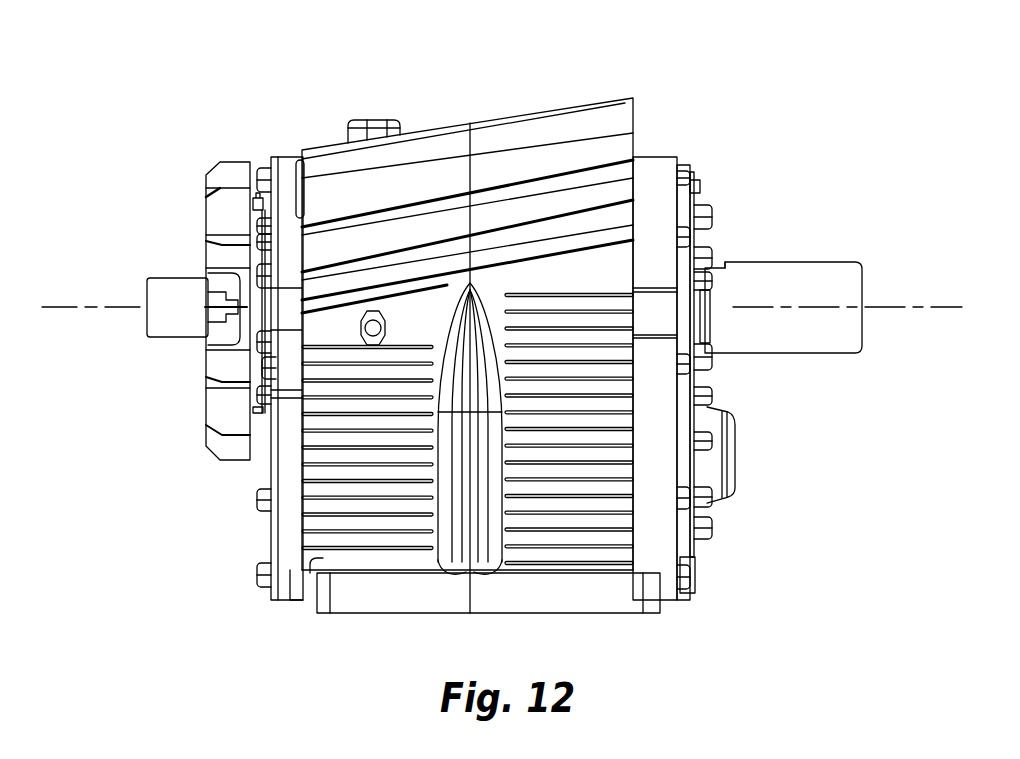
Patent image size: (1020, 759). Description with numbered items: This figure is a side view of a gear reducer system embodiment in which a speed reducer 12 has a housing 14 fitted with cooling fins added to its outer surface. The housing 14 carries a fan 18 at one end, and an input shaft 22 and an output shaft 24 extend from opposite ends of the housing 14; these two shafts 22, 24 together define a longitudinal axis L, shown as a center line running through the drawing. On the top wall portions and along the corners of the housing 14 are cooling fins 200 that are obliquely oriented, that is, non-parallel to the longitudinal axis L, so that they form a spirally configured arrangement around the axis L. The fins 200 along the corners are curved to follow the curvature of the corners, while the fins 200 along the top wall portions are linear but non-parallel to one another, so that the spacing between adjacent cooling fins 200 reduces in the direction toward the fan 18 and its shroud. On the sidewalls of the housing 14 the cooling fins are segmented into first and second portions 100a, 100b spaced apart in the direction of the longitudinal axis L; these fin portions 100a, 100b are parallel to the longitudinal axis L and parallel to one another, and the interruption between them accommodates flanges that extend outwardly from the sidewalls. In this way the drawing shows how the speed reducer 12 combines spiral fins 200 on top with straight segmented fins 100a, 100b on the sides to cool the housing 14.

The speed reducer 12 is at (352, 613).
The housing 14 is at (617, 267).
The fan 18 is at (220, 173).
The input shaft 22 is at (173, 291).
The output shaft 24 is at (805, 287).
The first portion of segmented cooling fins 100a is at (520, 447).
The second portion of segmented cooling fins 100b is at (386, 550).
The cooling fins 200 is at (531, 162).
The longitudinal axis L is at (915, 308).